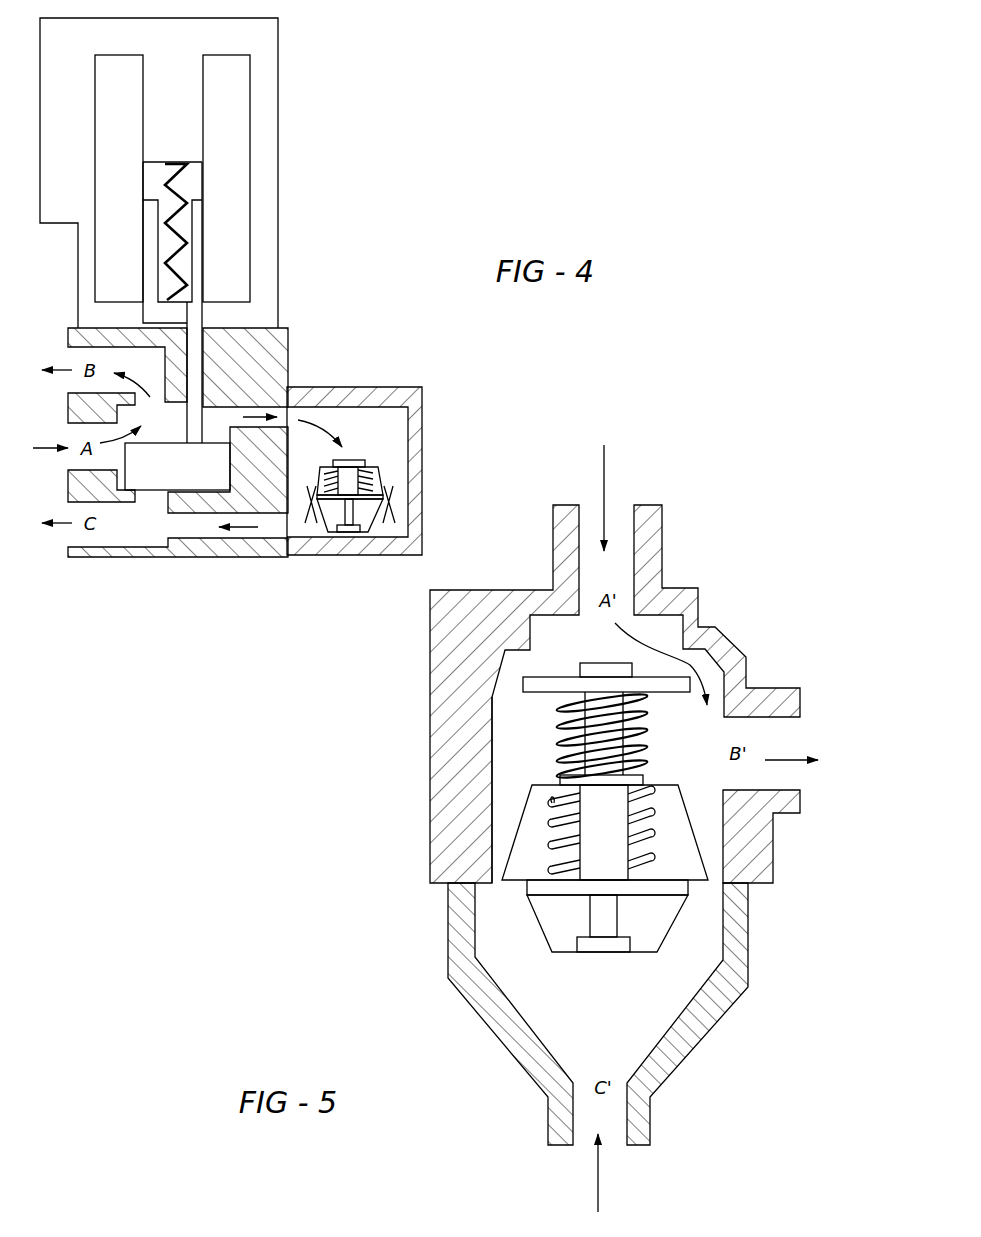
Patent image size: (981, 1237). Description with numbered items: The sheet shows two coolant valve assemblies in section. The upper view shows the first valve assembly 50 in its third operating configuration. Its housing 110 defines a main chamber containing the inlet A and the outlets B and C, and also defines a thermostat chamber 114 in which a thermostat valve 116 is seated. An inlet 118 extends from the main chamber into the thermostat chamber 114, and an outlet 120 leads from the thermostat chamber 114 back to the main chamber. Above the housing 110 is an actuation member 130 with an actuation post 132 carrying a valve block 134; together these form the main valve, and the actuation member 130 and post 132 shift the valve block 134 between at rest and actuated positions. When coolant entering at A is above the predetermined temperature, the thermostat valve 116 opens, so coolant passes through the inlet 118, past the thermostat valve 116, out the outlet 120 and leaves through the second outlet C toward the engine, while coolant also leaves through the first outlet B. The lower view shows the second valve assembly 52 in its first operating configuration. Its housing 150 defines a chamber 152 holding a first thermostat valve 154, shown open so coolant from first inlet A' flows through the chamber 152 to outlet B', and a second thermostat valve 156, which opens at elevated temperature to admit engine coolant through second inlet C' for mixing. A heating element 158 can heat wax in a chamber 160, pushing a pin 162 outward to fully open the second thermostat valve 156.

In FIG. 4, the first valve assembly 50 is at (335, 96).
In FIG. 4, the housing 110 is at (288, 333).
In FIG. 4, the thermostat chamber 114 is at (370, 410).
In FIG. 4, the thermostat valve 116 is at (347, 483).
In FIG. 4, the inlet 118 is at (283, 412).
In FIG. 4, the outlet 120 is at (190, 530).
In FIG. 4, the actuation member 130 is at (203, 173).
In FIG. 4, the actuation post 132 is at (195, 360).
In FIG. 4, the valve block 134 is at (210, 455).
In FIG. 5, the second valve assembly 52 is at (281, 852).
In FIG. 5, the housing 150 is at (442, 617).
In FIG. 5, the chamber 152 is at (492, 742).
In FIG. 5, the first thermostat valve 154 is at (567, 687).
In FIG. 5, the second thermostat valve 156 is at (652, 888).
In FIG. 5, the heating element 158 is at (563, 852).
In FIG. 5, the chamber 160 is at (593, 853).
In FIG. 5, the pin 162 is at (570, 893).